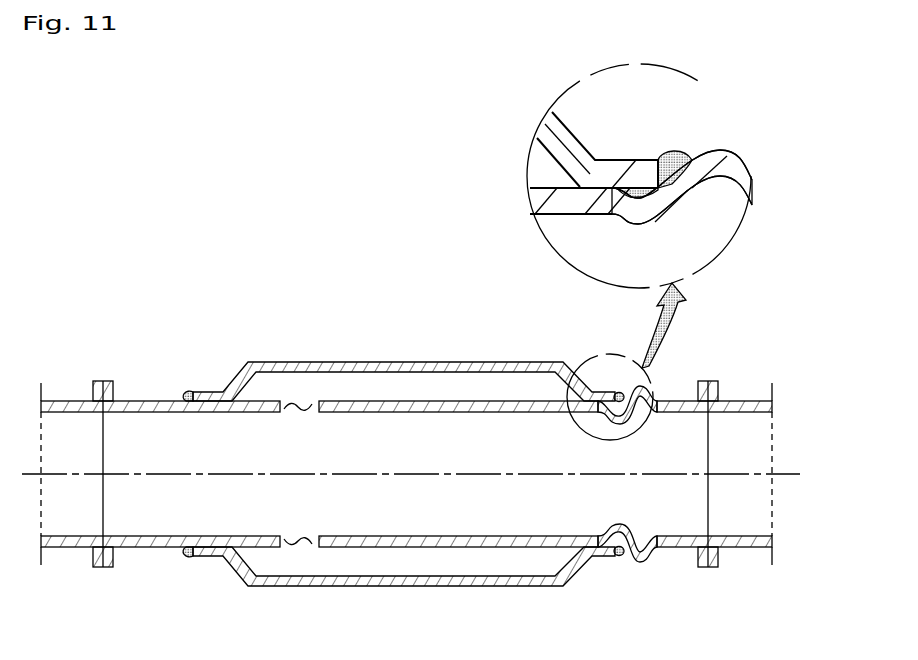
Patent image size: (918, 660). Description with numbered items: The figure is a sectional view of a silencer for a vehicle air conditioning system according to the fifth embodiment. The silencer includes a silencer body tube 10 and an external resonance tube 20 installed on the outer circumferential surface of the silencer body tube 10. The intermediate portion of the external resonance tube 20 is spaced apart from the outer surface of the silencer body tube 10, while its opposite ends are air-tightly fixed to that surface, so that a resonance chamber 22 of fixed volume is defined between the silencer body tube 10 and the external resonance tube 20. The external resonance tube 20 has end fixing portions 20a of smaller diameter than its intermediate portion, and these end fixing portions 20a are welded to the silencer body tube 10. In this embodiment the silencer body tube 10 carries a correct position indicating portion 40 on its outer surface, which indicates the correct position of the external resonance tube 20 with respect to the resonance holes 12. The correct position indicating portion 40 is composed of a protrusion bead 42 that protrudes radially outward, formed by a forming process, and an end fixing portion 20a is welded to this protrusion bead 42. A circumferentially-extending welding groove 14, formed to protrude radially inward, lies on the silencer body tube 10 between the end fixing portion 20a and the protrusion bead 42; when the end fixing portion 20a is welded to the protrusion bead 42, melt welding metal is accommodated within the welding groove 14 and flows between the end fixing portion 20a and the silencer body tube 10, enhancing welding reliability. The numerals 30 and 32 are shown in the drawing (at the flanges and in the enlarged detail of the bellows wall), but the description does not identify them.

The silencer body tube 10 is at (546, 547).
The resonance holes 12 is at (303, 403).
The welding groove 14 is at (627, 223).
The external resonance tube 20 is at (484, 586).
The end fixing portions 20a is at (206, 392).
The resonance chamber 22 is at (399, 560).
The flange 30 is at (64, 401).
The bellows wall 32 is at (723, 148).
The correct position indicating portion 40 is at (654, 390).
The protrusion bead 42 is at (657, 390).